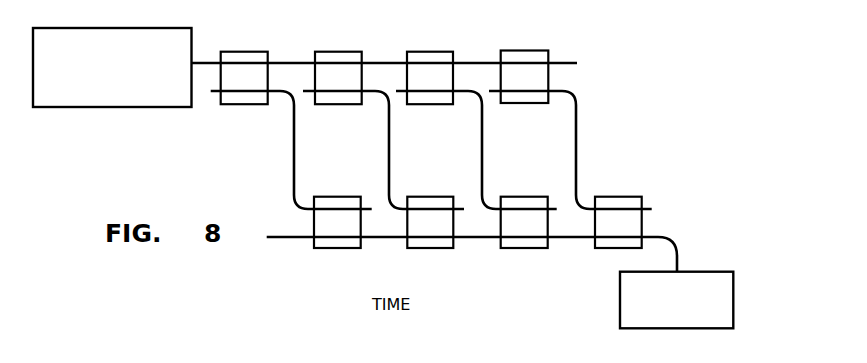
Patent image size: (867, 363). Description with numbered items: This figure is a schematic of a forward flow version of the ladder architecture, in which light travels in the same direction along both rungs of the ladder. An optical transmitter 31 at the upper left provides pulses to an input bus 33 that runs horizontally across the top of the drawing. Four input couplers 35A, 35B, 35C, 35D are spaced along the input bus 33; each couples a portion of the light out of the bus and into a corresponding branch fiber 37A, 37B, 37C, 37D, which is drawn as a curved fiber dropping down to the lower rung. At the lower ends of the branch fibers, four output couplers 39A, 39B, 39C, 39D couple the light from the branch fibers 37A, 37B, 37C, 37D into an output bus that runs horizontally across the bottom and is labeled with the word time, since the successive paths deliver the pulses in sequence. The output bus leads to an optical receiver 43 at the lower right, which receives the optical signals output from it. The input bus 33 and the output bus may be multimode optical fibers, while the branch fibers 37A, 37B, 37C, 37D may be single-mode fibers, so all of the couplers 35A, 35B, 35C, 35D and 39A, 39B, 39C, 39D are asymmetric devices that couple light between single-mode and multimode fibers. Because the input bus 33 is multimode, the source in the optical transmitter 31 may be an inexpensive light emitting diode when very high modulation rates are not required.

The optical transmitter 31 is at (102, 107).
The input bus 33 is at (200, 63).
The input coupler 35A is at (240, 105).
The input coupler 35B is at (322, 105).
The input coupler 35C is at (417, 105).
The input coupler 35D is at (546, 105).
The branch fiber 37A is at (293, 144).
The branch fiber 37B is at (385, 135).
The branch fiber 37C is at (480, 133).
The branch fiber 37D is at (575, 133).
The output coupler 39A is at (333, 248).
The output coupler 39B is at (425, 248).
The output coupler 39C is at (518, 248).
The output coupler 39D is at (613, 248).
The optical receiver 43 is at (620, 302).